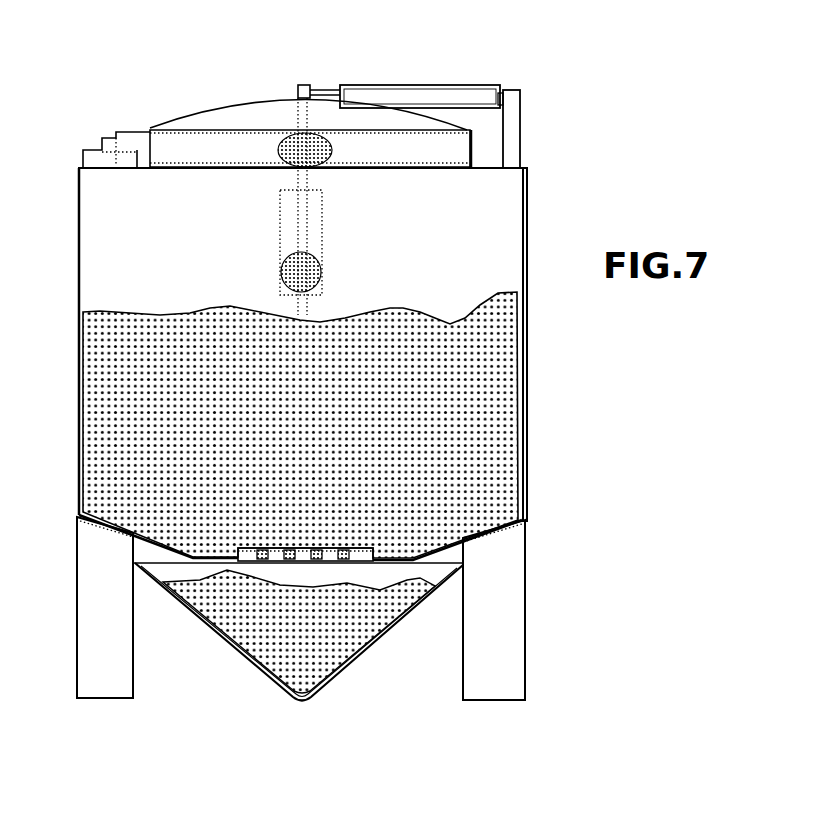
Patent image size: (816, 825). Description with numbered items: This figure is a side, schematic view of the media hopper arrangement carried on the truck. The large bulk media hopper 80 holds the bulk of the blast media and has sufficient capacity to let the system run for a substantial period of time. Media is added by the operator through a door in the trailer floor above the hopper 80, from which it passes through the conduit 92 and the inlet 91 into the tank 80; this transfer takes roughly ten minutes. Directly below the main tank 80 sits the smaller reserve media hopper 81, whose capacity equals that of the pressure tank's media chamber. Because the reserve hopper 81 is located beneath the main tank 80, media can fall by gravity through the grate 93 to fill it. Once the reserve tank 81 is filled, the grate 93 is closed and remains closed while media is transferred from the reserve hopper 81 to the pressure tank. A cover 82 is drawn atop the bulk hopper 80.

The bulk media hopper 80 is at (107, 395).
The reserve media hopper 81 is at (263, 637).
The lid / cover 82 is at (224, 109).
The inlet 91 is at (321, 271).
The conduit 92 is at (424, 87).
The grate 93 is at (250, 554).